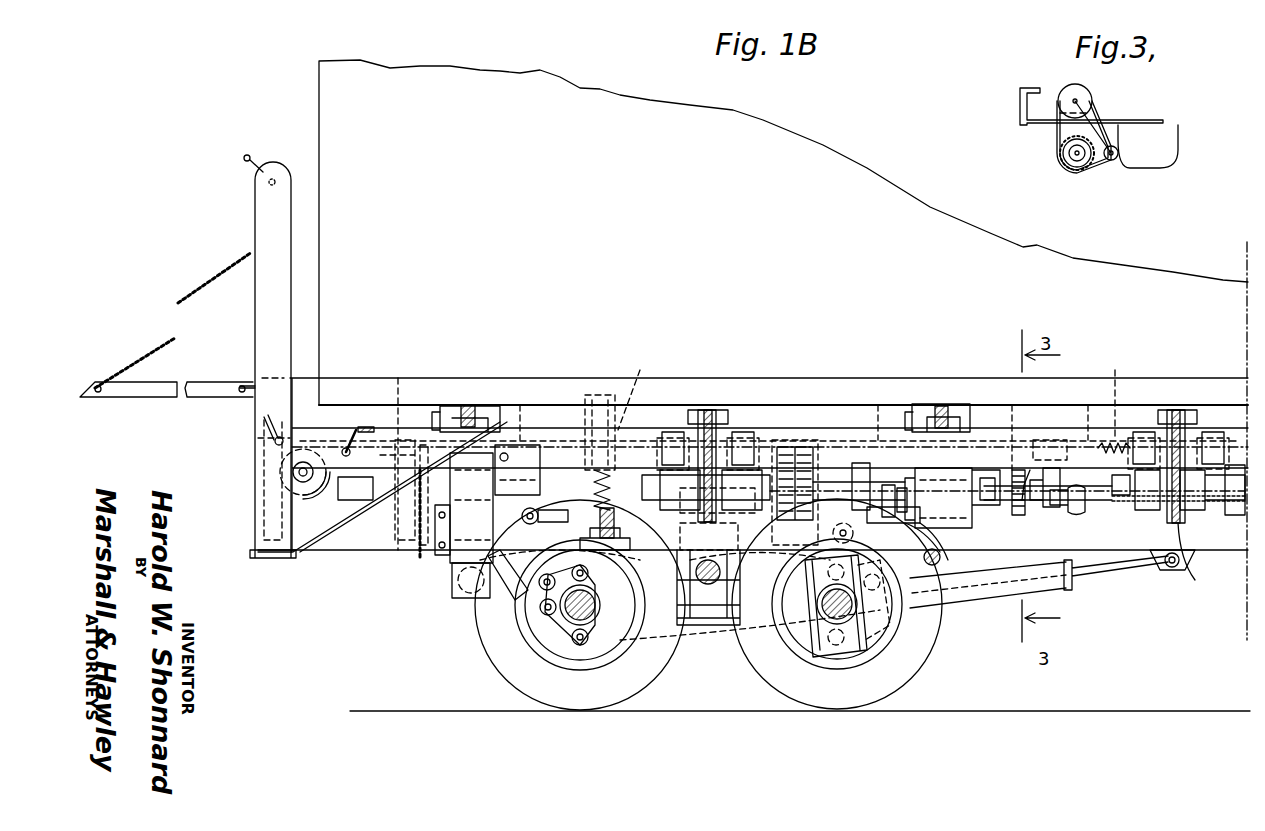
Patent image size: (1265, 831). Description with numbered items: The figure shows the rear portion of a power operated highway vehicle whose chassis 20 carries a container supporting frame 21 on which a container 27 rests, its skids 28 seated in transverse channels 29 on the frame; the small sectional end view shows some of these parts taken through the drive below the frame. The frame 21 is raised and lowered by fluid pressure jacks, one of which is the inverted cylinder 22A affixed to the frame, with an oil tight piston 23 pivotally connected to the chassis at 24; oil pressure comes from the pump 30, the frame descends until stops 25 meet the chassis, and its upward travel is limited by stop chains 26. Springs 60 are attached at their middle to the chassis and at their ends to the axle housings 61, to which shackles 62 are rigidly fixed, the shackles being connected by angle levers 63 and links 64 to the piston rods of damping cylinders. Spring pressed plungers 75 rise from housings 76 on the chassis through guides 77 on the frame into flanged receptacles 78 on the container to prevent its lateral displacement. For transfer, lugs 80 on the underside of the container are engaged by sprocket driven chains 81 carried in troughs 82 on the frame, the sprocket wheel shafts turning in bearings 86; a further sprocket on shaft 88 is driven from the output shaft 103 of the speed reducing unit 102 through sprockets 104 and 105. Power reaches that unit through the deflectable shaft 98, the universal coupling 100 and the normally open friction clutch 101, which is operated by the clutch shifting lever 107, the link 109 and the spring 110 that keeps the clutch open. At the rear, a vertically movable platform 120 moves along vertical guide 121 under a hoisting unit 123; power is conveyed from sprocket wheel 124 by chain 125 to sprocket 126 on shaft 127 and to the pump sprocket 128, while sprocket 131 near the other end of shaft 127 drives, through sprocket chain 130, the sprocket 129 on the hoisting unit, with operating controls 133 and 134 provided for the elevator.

In FIG. 1B, the container 27 is at (505, 79).
In FIG. 1B, the container supporting frame 21 is at (838, 430).
In FIG. 1B, the chassis 20 is at (325, 552).
In FIG. 3, the chassis 20 is at (1020, 108).
In FIG. 1B, the vertical guide 121 is at (258, 216).
In FIG. 1B, the operating control 133 is at (244, 160).
In FIG. 1B, the vertically movable platform 120 is at (165, 397).
In FIG. 1B, the operating control 134 is at (266, 424).
In FIG. 1B, the hoisting unit 123 is at (300, 490).
In FIG. 1B, the sprocket 129 is at (398, 505).
In FIG. 1B, the sprocket chain 130 is at (415, 505).
In FIG. 1B, the sprocket 131 is at (395, 451).
In FIG. 1B, the stop chains 26 is at (420, 560).
In FIG. 1B, the inverted cylinder 22A is at (440, 555).
In FIG. 1B, the piston 23 is at (460, 560).
In FIG. 1B, the pivotal connection 24 is at (466, 598).
In FIG. 1B, the stops 25 is at (519, 471).
In FIG. 1B, the skids 28 is at (470, 405).
In FIG. 1B, the transverse channels 29 is at (440, 412).
In FIG. 1B, the shaft 127 is at (804, 411).
In FIG. 3, the shaft 127 is at (1075, 101).
In FIG. 1B, the sprocket 105 is at (825, 392).
In FIG. 1B, the flanged receptacle 78 is at (590, 400).
In FIG. 1B, the guide 77 is at (637, 390).
In FIG. 1B, the spring pressed plunger 75 is at (594, 487).
In FIG. 1B, the housing 76 is at (583, 528).
In FIG. 1B, the lugs 80 is at (712, 405).
In FIG. 1B, the trough 82 is at (688, 410).
In FIG. 1B, the bearings 86 is at (672, 432).
In FIG. 1B, the sprocket driven chain 81 is at (720, 428).
In FIG. 1B, the spring 110 is at (1122, 393).
In FIG. 1B, the link 109 is at (1106, 417).
In FIG. 1B, the clutch shifting lever 107 is at (1036, 442).
In FIG. 1B, the sprocket 126 is at (1012, 426).
In FIG. 3, the sprocket 126 is at (1090, 107).
In FIG. 1B, the chain 125 is at (1030, 470).
In FIG. 3, the chain 125 is at (1057, 140).
In FIG. 1B, the sprocket 104 is at (779, 489).
In FIG. 1B, the output shaft 103 is at (825, 520).
In FIG. 1B, the pump 30 is at (990, 505).
In FIG. 3, the pump 30 is at (1125, 140).
In FIG. 1B, the shaft 88 is at (835, 490).
In FIG. 1B, the angle lever 63 is at (907, 525).
In FIG. 1B, the speed reducing unit 102 is at (952, 498).
In FIG. 1B, the sprocket wheel 124 is at (1015, 515).
In FIG. 1B, the friction clutch 101 is at (1050, 507).
In FIG. 3, the friction clutch 101 is at (1080, 167).
In FIG. 1B, the universal coupling 100 is at (1076, 512).
In FIG. 1B, the deflectable shaft 98 is at (1238, 515).
In FIG. 1B, the springs 60 is at (650, 553).
In FIG. 1B, the shackles 62 is at (560, 625).
In FIG. 1B, the axle housing 61 is at (820, 590).
In FIG. 1B, the link 64 is at (915, 608).
In FIG. 3, the pump sprocket 128 is at (1118, 157).